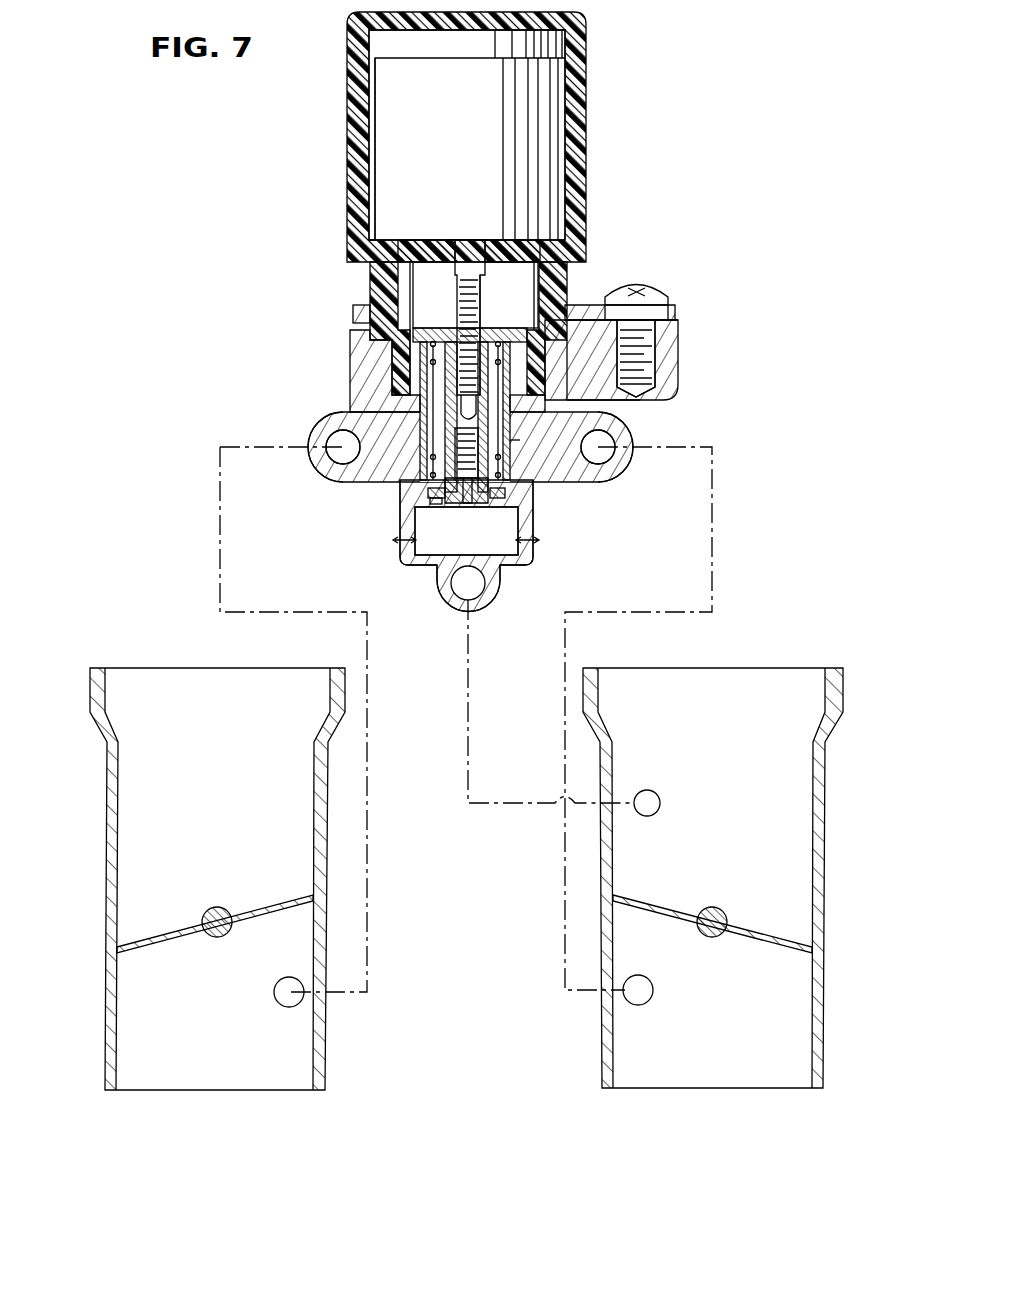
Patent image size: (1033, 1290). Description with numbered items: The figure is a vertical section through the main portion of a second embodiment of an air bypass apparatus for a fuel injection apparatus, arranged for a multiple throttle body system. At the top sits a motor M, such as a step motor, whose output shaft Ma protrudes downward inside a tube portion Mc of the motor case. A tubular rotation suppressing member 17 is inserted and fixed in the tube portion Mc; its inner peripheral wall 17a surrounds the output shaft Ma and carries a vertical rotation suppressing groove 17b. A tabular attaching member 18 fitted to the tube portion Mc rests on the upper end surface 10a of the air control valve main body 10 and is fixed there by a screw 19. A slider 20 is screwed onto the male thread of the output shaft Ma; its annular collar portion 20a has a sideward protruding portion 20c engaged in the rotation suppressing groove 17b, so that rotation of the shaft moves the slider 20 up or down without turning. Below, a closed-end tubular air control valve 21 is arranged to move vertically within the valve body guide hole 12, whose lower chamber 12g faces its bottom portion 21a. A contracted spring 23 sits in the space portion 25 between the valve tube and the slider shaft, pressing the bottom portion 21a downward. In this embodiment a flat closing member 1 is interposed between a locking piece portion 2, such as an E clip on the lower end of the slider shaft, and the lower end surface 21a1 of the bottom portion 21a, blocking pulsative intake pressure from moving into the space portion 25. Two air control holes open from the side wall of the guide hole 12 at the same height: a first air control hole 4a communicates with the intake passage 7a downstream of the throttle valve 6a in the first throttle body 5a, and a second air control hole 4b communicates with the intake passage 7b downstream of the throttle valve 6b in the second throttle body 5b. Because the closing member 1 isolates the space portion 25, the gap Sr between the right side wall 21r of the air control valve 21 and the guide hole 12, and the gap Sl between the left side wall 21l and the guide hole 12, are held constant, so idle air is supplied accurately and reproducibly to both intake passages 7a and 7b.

The motor M is at (452, 108).
The output shaft Ma is at (590, 255).
The tube portion Mc is at (372, 302).
The air control valve main body 10 is at (680, 388).
The upper end surface 10a is at (680, 338).
The attaching member 18 is at (676, 312).
The screw 19 is at (660, 292).
The rotation suppressing member 17 is at (405, 272).
The inner peripheral wall 17a is at (500, 295).
The rotation suppressing groove 17b is at (583, 275).
The slider 20 is at (398, 392).
The annular collar portion 20a is at (433, 322).
The protruding portion 20c is at (568, 290).
The spring 23 is at (400, 408).
The closing member 1 is at (538, 530).
The locking piece portion 2 is at (535, 548).
The valve body guide hole 12 is at (428, 520).
The lower chamber 12g is at (446, 548).
The gap Sl is at (405, 556).
The gap Sr is at (539, 574).
The air control valve 21 is at (640, 404).
The bottom portion 21a is at (422, 490).
The seal lip 21a1 is at (420, 522).
The left side wall 21l is at (398, 408).
The right side wall 21r is at (530, 490).
The space portion 25 is at (520, 440).
The first air control hole 4a is at (585, 480).
The second air control hole 4b is at (345, 478).
The first throttle body 5a is at (825, 855).
The second throttle body 5b is at (92, 866).
The throttle valve 6a is at (764, 935).
The throttle valve 6b is at (182, 932).
The intake passage 7a is at (682, 1068).
The intake passage 7b is at (192, 1073).